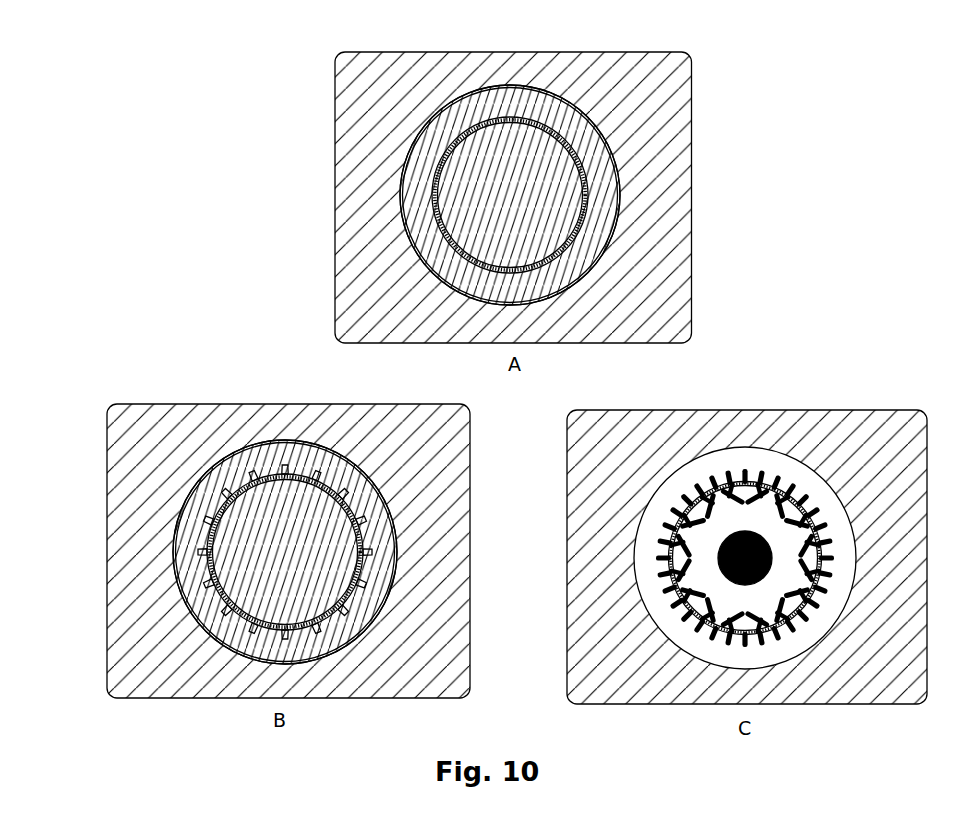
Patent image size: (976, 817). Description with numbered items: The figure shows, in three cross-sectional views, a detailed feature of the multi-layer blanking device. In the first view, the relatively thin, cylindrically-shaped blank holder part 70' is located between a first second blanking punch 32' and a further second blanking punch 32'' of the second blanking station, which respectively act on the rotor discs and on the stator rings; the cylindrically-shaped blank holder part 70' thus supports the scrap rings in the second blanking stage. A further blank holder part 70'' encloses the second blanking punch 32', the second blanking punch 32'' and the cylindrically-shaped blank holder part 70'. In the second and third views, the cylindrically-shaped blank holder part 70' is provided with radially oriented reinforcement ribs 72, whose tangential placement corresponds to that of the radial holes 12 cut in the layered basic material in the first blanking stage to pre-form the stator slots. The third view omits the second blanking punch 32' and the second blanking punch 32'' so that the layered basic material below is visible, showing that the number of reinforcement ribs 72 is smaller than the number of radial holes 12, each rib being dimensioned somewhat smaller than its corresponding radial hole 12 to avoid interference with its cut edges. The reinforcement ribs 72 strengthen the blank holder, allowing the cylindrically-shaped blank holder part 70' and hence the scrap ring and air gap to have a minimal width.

The cylindrically-shaped blank holder part 70' is at (514, 376).
The further part of the blank holder 70'' is at (517, 378).
The second blanking punch 32' is at (397, 374).
The second blanking punch 32'' is at (397, 374).
The reinforcement ribs 72 is at (660, 562).
The radial holes 12 is at (658, 560).